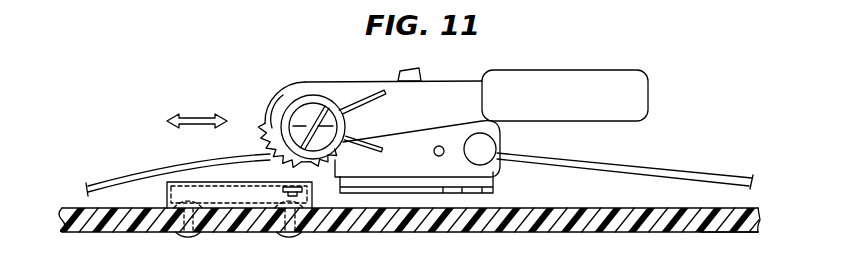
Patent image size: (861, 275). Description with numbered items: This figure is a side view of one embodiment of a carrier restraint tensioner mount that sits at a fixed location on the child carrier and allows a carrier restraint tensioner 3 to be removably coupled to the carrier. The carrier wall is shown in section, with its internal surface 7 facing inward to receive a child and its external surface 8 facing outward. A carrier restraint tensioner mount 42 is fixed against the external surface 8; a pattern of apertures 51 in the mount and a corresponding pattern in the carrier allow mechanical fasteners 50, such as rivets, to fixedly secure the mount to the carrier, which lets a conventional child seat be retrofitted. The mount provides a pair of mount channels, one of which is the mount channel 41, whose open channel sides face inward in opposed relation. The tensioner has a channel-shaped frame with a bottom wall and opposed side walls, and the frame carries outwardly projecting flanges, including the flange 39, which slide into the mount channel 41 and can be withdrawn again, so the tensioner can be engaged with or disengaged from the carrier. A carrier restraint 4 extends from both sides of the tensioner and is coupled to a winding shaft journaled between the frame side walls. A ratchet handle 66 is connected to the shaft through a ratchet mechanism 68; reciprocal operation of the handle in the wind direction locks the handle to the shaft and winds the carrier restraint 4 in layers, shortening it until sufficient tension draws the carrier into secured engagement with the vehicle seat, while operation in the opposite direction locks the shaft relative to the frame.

The carrier restraint tensioner 3 is at (313, 74).
The ratchet mechanism 68 is at (265, 147).
The carrier restraint 4 is at (140, 172).
The ratchet handle 66 is at (647, 78).
The flange 39 is at (442, 190).
The external surface 8 is at (68, 208).
The internal surface 7 is at (743, 233).
The mount channel 41 is at (253, 193).
The carrier restraint tensioner mount 42 is at (217, 200).
The apertures 51 is at (300, 212).
The mechanical fasteners 50 is at (303, 193).